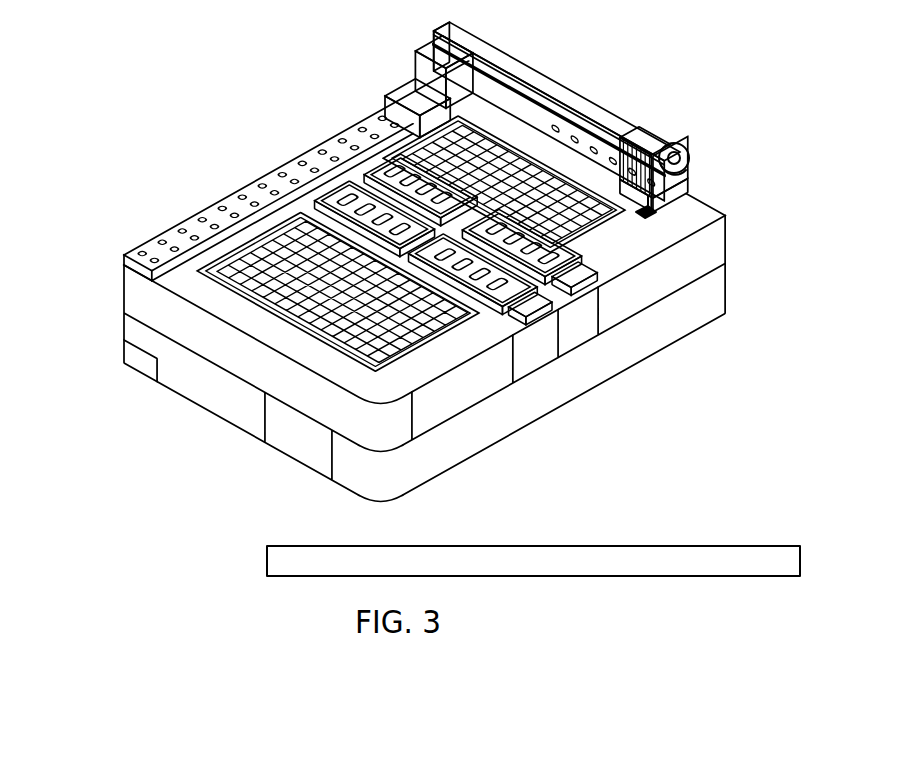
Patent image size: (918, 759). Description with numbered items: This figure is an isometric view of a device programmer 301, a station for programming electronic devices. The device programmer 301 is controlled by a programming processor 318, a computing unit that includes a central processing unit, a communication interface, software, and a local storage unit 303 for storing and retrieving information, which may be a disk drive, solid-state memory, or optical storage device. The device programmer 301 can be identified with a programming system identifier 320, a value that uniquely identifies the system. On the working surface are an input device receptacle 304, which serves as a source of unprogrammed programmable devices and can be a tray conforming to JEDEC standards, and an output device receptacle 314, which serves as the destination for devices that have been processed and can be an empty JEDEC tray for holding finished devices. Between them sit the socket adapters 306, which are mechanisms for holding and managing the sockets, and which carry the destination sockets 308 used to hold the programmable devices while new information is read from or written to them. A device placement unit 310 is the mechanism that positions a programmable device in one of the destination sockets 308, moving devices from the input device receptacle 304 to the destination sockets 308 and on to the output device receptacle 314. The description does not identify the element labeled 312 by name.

The device programmer 301 is at (190, 72).
The local storage unit 303 is at (140, 362).
The input device receptacle 304 is at (215, 297).
The socket adapters 306 is at (566, 290).
The destination sockets 308 is at (348, 222).
The device placement unit 310 is at (658, 130).
The connector 312 is at (658, 222).
The output device receptacle 314 is at (603, 256).
The programming processor 318 is at (186, 384).
The programming system identifier 320 is at (232, 434).